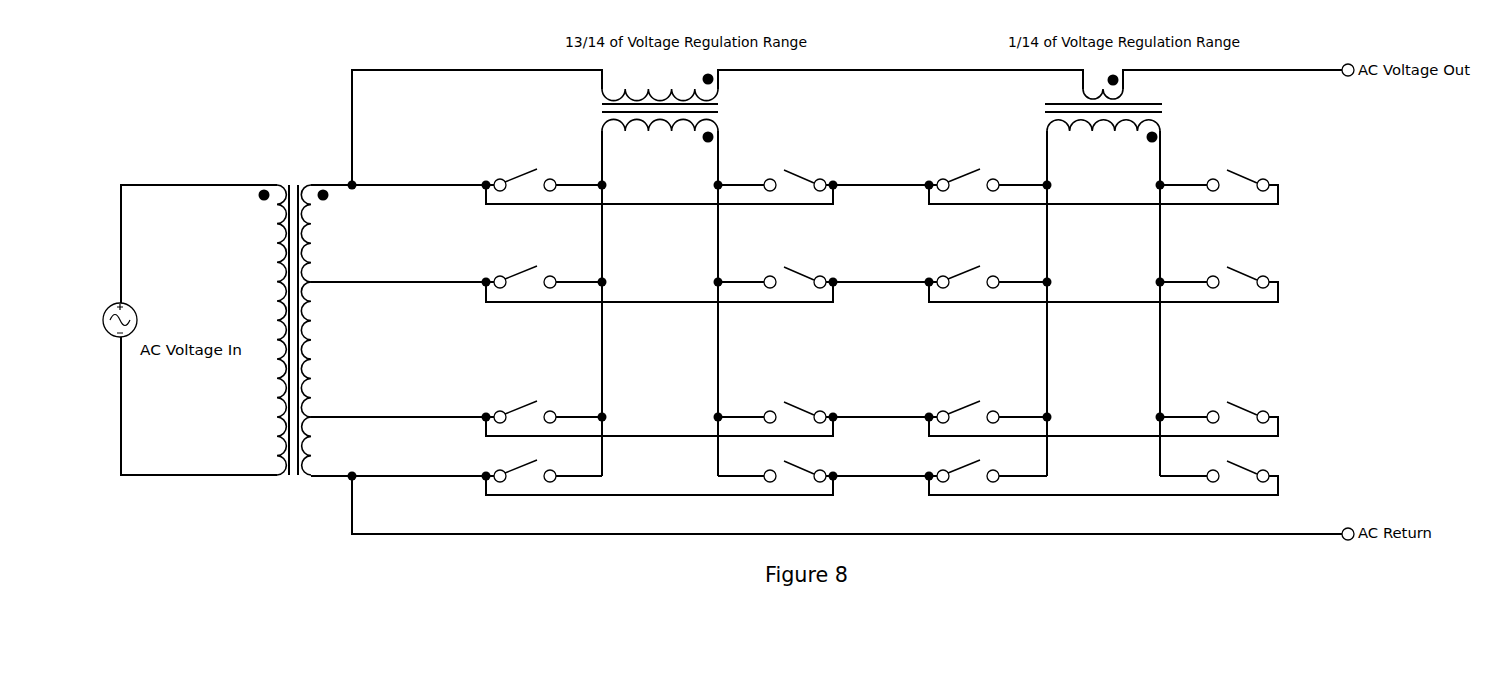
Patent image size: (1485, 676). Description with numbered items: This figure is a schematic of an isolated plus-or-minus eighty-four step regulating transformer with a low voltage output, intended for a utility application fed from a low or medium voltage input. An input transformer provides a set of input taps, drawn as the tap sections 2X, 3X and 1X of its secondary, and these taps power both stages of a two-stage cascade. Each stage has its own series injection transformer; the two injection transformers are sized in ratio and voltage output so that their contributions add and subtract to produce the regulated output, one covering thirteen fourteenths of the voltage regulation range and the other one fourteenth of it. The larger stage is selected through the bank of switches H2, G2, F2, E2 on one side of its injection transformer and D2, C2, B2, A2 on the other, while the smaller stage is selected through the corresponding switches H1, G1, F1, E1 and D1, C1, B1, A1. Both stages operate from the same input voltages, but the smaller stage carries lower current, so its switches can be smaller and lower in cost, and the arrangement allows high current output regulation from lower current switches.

The transformer secondary winding 2X is at (327, 233).
The transformer secondary winding 3X is at (327, 349).
The transformer secondary winding 1X is at (328, 446).
The switch H2 is at (659, 179).
The switch G2 is at (659, 276).
The switch F2 is at (659, 411).
The switch E2 is at (659, 470).
The switch D2 is at (775, 172).
The switch C2 is at (775, 269).
The switch B2 is at (775, 405).
The switch A2 is at (775, 464).
The switch H1 is at (940, 172).
The switch G1 is at (940, 269).
The switch F1 is at (940, 405).
The switch E1 is at (940, 464).
The switch D1 is at (1103, 179).
The switch C1 is at (1103, 276).
The switch B1 is at (1103, 411).
The switch A1 is at (1103, 470).